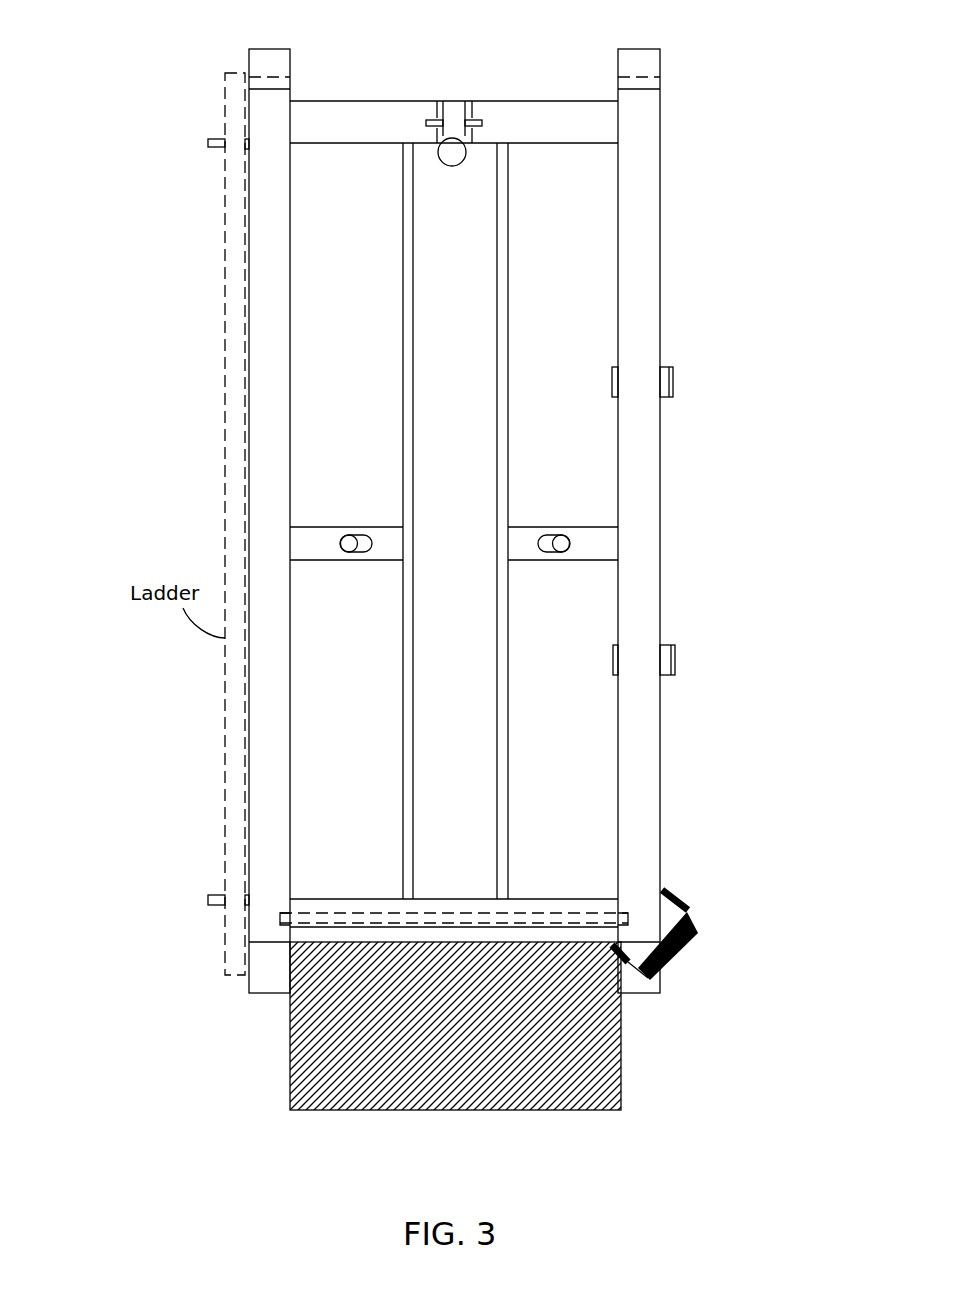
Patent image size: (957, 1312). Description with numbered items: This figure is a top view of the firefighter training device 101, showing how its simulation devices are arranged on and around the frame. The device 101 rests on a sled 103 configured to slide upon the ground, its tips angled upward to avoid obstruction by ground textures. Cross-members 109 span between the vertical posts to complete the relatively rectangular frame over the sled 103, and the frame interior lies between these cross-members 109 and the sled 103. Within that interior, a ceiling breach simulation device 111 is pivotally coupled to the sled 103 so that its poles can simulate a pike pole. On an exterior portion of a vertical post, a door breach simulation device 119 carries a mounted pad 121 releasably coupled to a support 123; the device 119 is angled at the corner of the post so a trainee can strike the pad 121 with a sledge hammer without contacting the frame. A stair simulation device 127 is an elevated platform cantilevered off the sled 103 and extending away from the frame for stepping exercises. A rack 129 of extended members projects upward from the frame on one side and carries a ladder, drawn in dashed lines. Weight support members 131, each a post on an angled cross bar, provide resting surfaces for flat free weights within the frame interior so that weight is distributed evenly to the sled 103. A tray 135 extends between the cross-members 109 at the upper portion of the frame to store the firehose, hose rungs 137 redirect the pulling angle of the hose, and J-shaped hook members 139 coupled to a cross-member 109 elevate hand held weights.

The firefighter training device 101 is at (133, 33).
The sled 103 is at (636, 49).
The cross-members 109 is at (400, 101).
The ceiling breach simulation device 111 is at (494, 101).
The door breach simulation device 119 is at (731, 907).
The mounted pad 121 is at (693, 952).
The support 123 is at (682, 907).
The stair simulation device 127 is at (475, 1036).
The rack 129 is at (208, 141).
The weight support member 131 is at (326, 512).
The tray 135 is at (475, 429).
The hose rung 137 is at (378, 915).
The hook member 139 is at (673, 367).